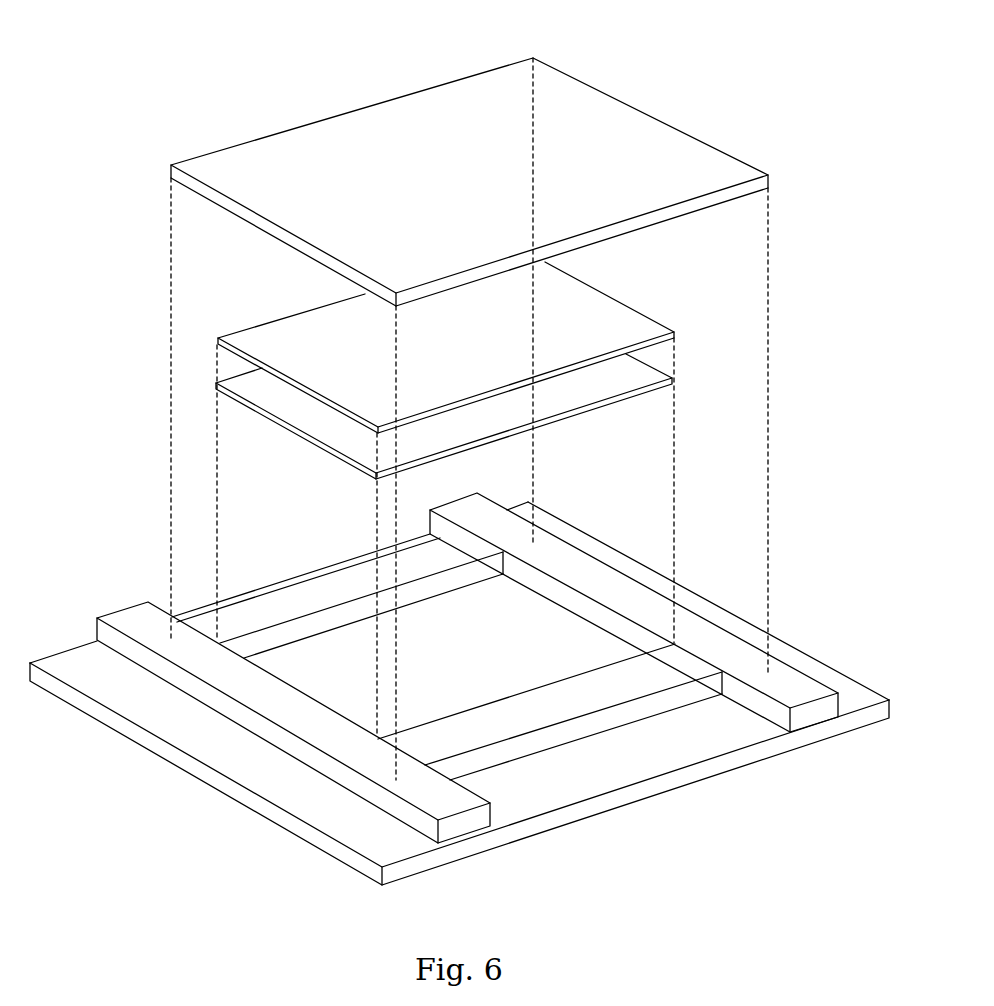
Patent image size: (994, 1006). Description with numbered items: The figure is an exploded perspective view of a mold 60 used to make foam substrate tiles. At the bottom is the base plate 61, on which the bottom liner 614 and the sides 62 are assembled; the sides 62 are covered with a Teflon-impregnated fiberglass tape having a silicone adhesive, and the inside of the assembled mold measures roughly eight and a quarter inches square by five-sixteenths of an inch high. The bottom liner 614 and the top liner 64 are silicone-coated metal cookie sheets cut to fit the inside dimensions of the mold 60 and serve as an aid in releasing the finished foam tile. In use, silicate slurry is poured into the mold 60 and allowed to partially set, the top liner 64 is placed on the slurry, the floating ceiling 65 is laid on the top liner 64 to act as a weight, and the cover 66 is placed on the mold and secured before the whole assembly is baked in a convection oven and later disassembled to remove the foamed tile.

The mold 60 is at (807, 457).
The base plate 61 is at (355, 833).
The sides 62 is at (345, 610).
The bottom liner 614 is at (453, 680).
The top liner 64 is at (555, 395).
The floating ceiling 65 is at (580, 325).
The cover 66 is at (578, 120).